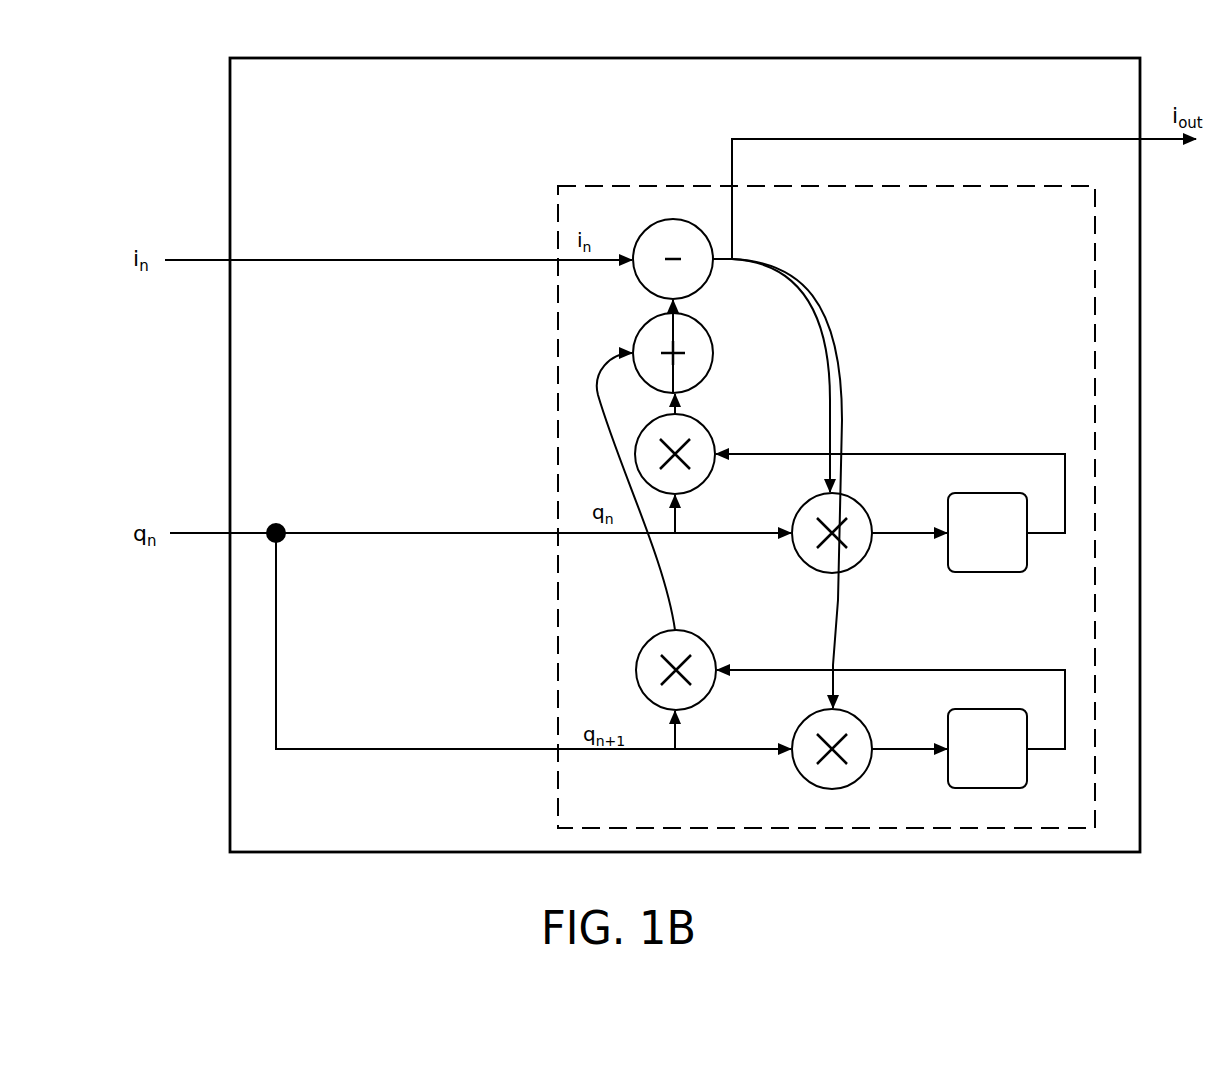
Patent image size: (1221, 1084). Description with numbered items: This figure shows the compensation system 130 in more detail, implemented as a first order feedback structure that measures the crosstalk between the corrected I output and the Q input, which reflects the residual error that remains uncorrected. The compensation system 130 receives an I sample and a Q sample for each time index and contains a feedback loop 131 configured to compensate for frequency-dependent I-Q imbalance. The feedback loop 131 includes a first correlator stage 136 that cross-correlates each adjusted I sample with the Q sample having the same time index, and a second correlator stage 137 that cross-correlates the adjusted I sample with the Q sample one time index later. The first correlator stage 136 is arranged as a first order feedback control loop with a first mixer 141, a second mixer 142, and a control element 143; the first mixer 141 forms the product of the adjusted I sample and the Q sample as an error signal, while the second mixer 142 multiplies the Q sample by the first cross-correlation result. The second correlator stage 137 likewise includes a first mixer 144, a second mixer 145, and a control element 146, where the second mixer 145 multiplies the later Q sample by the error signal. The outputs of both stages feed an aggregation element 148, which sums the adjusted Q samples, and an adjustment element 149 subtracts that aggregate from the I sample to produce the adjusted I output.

The compensation system 130 is at (229, 146).
The feedback loop 131 is at (1028, 185).
The first correlator stage 136 is at (919, 412).
The second correlator stage 137 is at (606, 652).
The first mixer 141 is at (861, 560).
The second mixer 142 is at (707, 431).
The control element 143 is at (1027, 568).
The first mixer 144 is at (864, 780).
The second mixer 145 is at (705, 708).
The control element 146 is at (1027, 784).
The aggregation element 148 is at (646, 333).
The adjustment element 149 is at (652, 230).